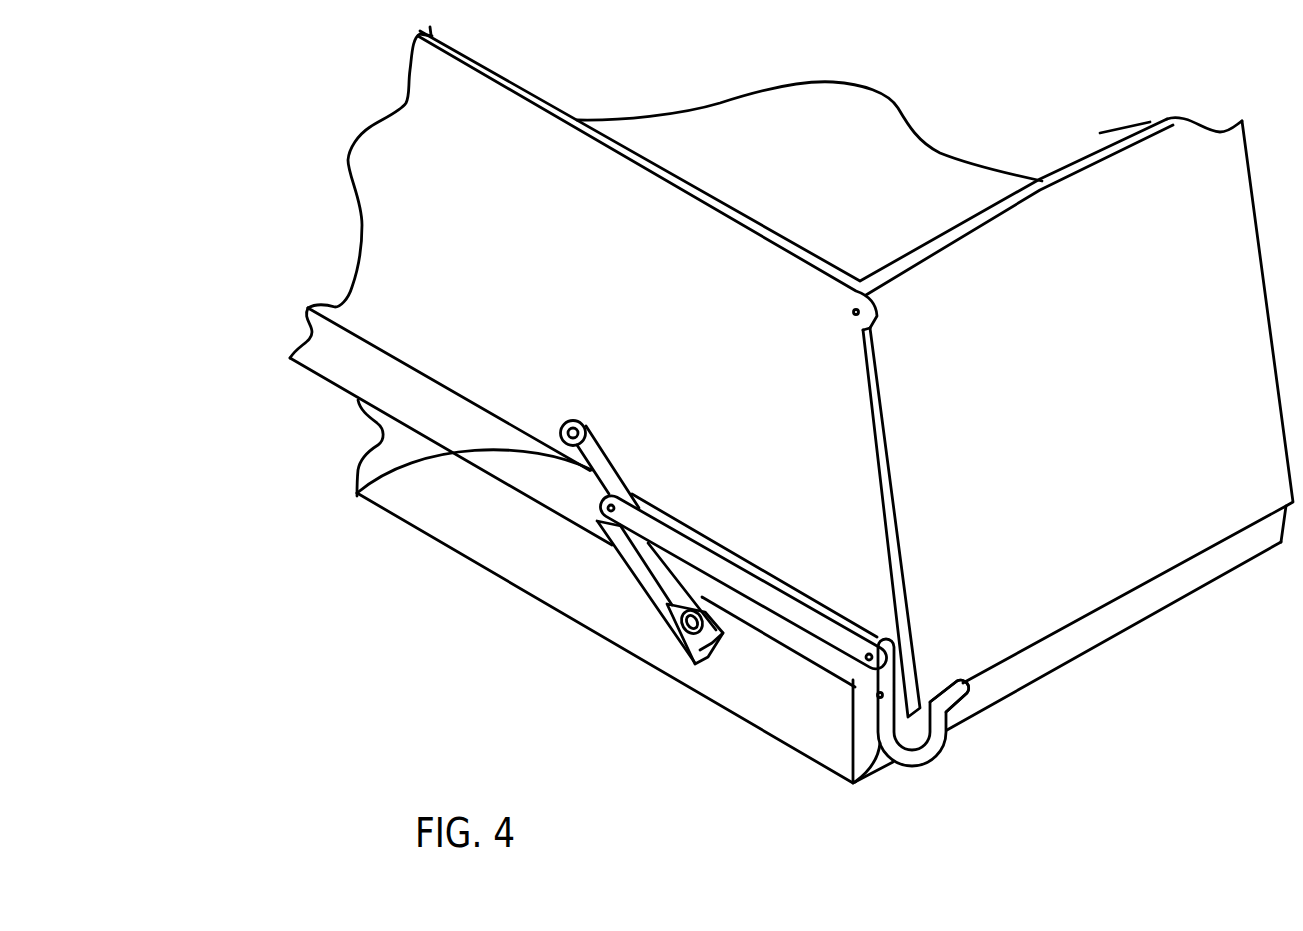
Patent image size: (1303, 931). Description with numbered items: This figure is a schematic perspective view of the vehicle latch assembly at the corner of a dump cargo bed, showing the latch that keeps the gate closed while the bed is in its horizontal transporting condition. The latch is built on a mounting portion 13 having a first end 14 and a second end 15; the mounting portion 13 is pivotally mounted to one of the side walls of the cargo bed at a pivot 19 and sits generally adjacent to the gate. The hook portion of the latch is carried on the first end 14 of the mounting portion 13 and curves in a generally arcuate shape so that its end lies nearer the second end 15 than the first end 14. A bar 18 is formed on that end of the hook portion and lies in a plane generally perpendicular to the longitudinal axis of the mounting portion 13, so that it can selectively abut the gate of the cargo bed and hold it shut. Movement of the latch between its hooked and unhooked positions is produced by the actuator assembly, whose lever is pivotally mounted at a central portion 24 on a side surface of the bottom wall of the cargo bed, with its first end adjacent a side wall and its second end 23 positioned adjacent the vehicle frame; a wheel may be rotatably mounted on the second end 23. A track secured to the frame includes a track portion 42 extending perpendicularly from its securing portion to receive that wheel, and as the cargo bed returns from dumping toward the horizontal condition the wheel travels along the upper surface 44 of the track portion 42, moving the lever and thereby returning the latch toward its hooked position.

The mounting portion 13 is at (877, 721).
The first end 14 is at (853, 782).
The second end 15 is at (880, 675).
The bar 18 is at (952, 700).
The pivot 19 is at (652, 562).
The second end 23 is at (673, 600).
The central portion 24 is at (357, 493).
The track portion 42 is at (682, 643).
The upper surface 44 is at (618, 529).